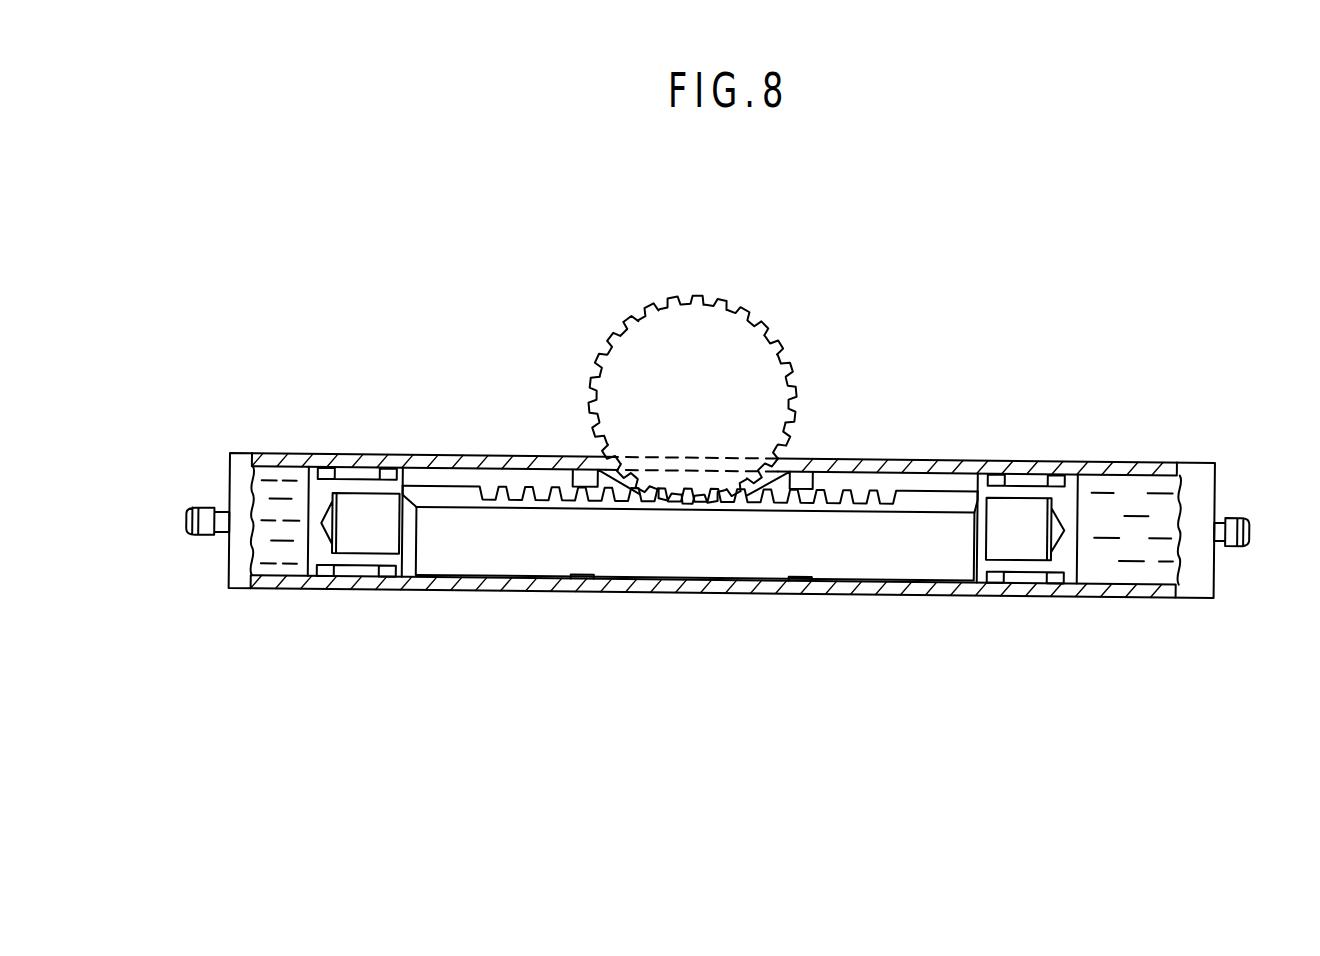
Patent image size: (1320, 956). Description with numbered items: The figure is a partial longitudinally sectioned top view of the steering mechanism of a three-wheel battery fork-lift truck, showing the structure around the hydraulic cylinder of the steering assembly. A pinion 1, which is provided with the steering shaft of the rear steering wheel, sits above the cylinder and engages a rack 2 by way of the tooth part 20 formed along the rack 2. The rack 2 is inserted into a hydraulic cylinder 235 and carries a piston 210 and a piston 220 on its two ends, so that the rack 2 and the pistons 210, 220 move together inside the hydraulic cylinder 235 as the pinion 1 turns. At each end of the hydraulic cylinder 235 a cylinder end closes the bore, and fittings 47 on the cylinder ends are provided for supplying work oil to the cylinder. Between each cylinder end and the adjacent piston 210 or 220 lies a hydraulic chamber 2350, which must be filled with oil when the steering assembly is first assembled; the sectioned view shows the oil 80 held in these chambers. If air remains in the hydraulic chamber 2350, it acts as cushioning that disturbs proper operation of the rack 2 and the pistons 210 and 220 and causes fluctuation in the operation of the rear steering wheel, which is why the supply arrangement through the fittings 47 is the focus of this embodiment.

The pinion 1 is at (782, 338).
The rack 2 is at (682, 545).
The tooth part 20 is at (515, 490).
The fittings 47 is at (207, 508).
The hydraulic fluid 80 is at (290, 512).
The piston 210 is at (1017, 567).
The piston 220 is at (358, 562).
The hydraulic cylinder 235 is at (295, 454).
The hydraulic chamber 2350 is at (263, 473).